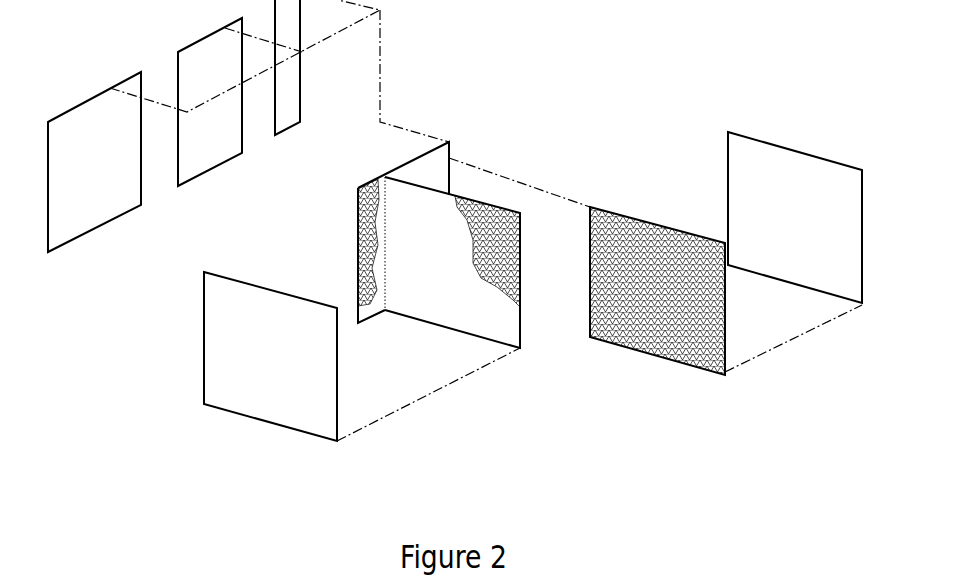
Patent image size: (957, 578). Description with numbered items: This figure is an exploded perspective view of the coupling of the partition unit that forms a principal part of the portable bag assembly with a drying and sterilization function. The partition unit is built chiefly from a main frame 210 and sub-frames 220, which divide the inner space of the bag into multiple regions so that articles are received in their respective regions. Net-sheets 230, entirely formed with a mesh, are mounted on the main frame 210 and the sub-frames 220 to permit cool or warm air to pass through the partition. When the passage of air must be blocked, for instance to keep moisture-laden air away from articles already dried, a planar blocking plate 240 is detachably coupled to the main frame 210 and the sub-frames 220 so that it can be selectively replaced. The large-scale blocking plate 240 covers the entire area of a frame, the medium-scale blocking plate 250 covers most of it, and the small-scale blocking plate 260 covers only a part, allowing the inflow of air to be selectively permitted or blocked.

The main frame 210 is at (450, 153).
The sub-frames 220 is at (590, 307).
The net-sheets 230 is at (358, 239).
The blocking plate 240 is at (93, 228).
The medium-scale blocking plate 250 is at (205, 170).
The small-scale blocking plate 260 is at (283, 128).